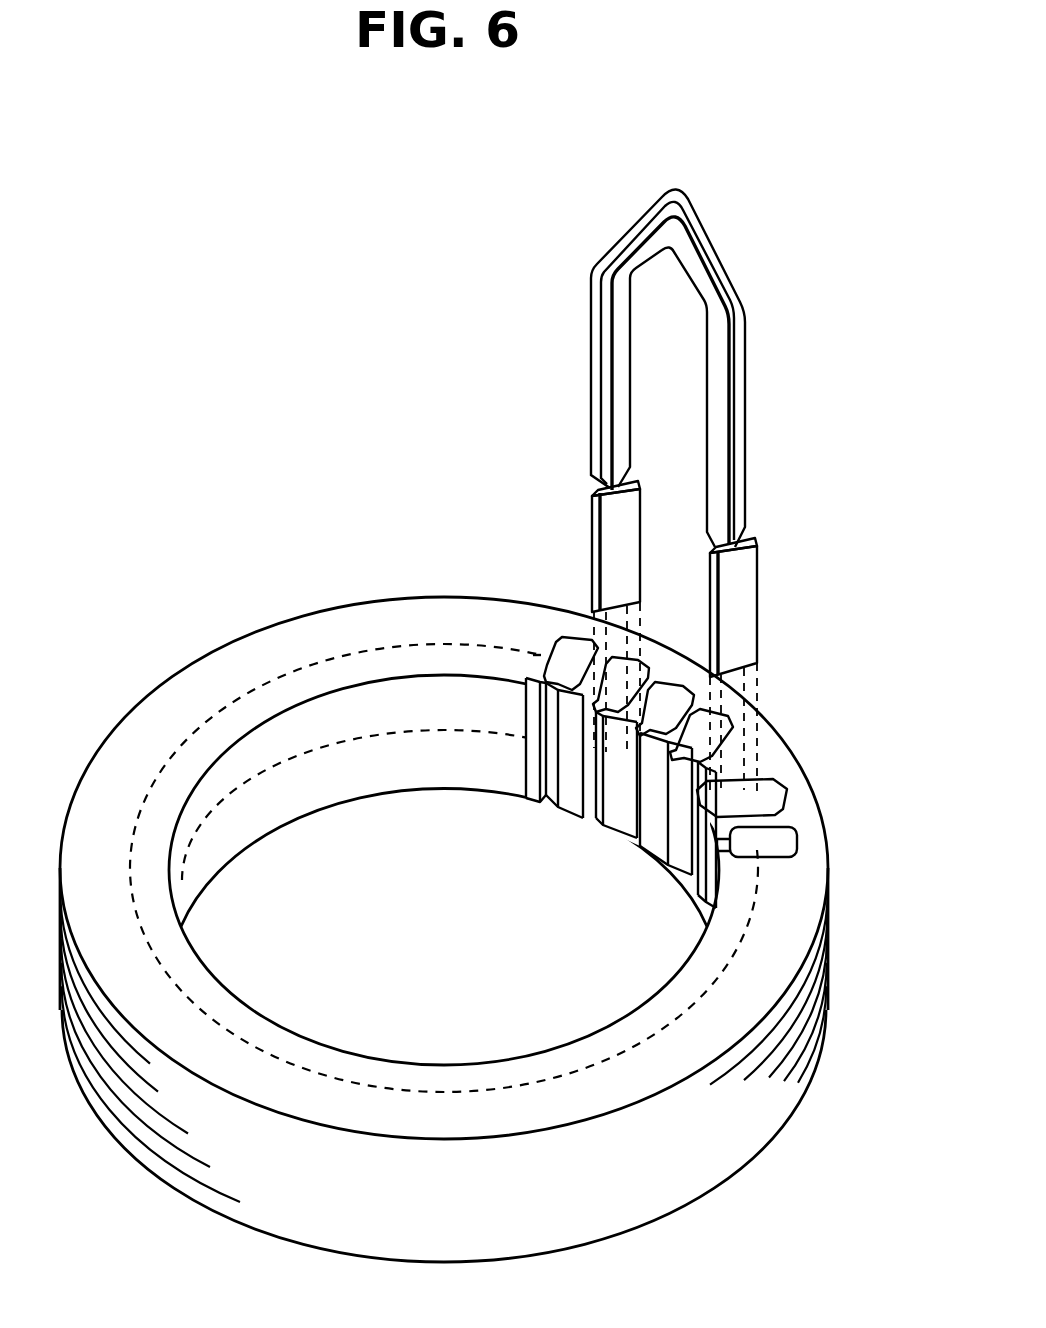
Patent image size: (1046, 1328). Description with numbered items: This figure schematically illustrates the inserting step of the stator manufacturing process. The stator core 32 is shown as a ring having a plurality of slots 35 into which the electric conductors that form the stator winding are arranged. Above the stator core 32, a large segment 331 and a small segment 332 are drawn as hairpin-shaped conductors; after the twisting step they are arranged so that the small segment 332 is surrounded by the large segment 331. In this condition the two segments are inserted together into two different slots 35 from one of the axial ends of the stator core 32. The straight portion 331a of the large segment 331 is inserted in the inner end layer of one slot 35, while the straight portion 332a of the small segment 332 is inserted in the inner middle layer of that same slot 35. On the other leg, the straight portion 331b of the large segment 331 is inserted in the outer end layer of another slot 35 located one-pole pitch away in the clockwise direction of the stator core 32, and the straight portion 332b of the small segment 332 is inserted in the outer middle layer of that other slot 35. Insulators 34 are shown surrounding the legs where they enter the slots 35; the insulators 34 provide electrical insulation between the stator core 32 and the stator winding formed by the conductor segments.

The stator core 32 is at (380, 617).
The large segment 331 is at (693, 222).
The small segment 332 is at (700, 270).
The straight portion 331a is at (603, 320).
The straight portion 332a is at (621, 371).
The straight portion 331b is at (738, 383).
The straight portion 332b is at (723, 437).
The insulator 34 is at (620, 543).
The slot 35 is at (763, 797).